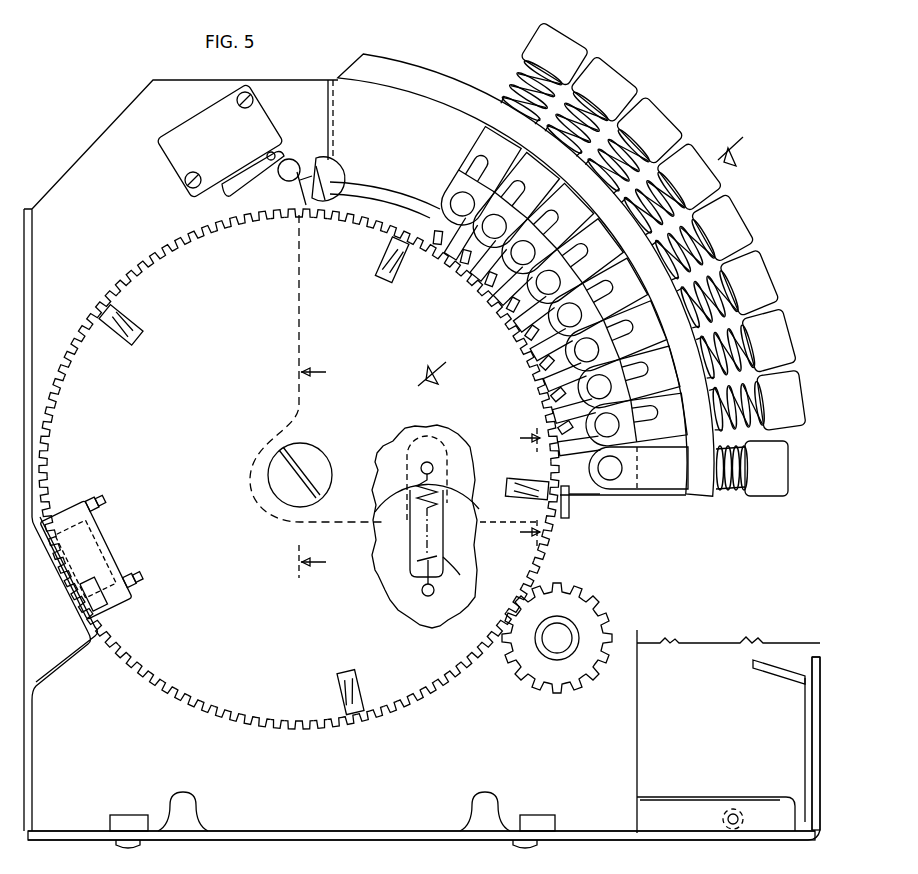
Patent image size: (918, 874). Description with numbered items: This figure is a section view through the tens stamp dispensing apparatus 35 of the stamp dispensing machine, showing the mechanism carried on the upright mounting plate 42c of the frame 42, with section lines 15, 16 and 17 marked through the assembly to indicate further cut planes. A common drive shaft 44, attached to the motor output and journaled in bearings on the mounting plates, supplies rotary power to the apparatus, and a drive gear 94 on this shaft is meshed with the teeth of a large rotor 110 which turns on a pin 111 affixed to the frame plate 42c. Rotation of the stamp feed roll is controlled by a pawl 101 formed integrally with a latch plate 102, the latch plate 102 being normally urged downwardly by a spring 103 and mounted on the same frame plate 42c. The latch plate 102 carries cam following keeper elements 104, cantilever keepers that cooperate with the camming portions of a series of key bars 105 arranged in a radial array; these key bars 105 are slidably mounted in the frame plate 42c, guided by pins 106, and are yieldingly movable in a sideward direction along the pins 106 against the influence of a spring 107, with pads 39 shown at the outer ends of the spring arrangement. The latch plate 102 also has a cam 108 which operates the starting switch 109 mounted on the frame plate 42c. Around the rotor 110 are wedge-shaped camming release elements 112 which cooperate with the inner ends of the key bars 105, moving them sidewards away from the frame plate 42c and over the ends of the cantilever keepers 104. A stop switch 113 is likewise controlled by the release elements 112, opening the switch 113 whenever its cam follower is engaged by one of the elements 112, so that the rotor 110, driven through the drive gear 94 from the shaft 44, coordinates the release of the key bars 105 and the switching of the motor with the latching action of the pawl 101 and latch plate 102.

The section line 15 is at (589, 270).
The section line 16 is at (510, 487).
The section line 17 is at (325, 470).
The tens stamp dispensing apparatus 35 is at (107, 128).
The cartridge pad 39 is at (775, 333).
The frame 42 is at (372, 842).
The upright mounting plate 42c is at (514, 753).
The common drive shaft 44 is at (566, 652).
The drive gear 94 is at (598, 604).
The pawl 101 is at (570, 505).
The latch plate 102 is at (425, 526).
The spring 103 is at (443, 532).
The cam following keeper elements 104 is at (520, 370).
The key bars 105 is at (684, 427).
The pins 106 is at (612, 472).
The spring 107 is at (728, 490).
The cam 108 is at (302, 182).
The starting switch 109 is at (262, 126).
The rotor 110 is at (412, 708).
The pin 111 is at (288, 485).
The camming release elements 112 is at (395, 278).
The stop switch 113 is at (100, 555).